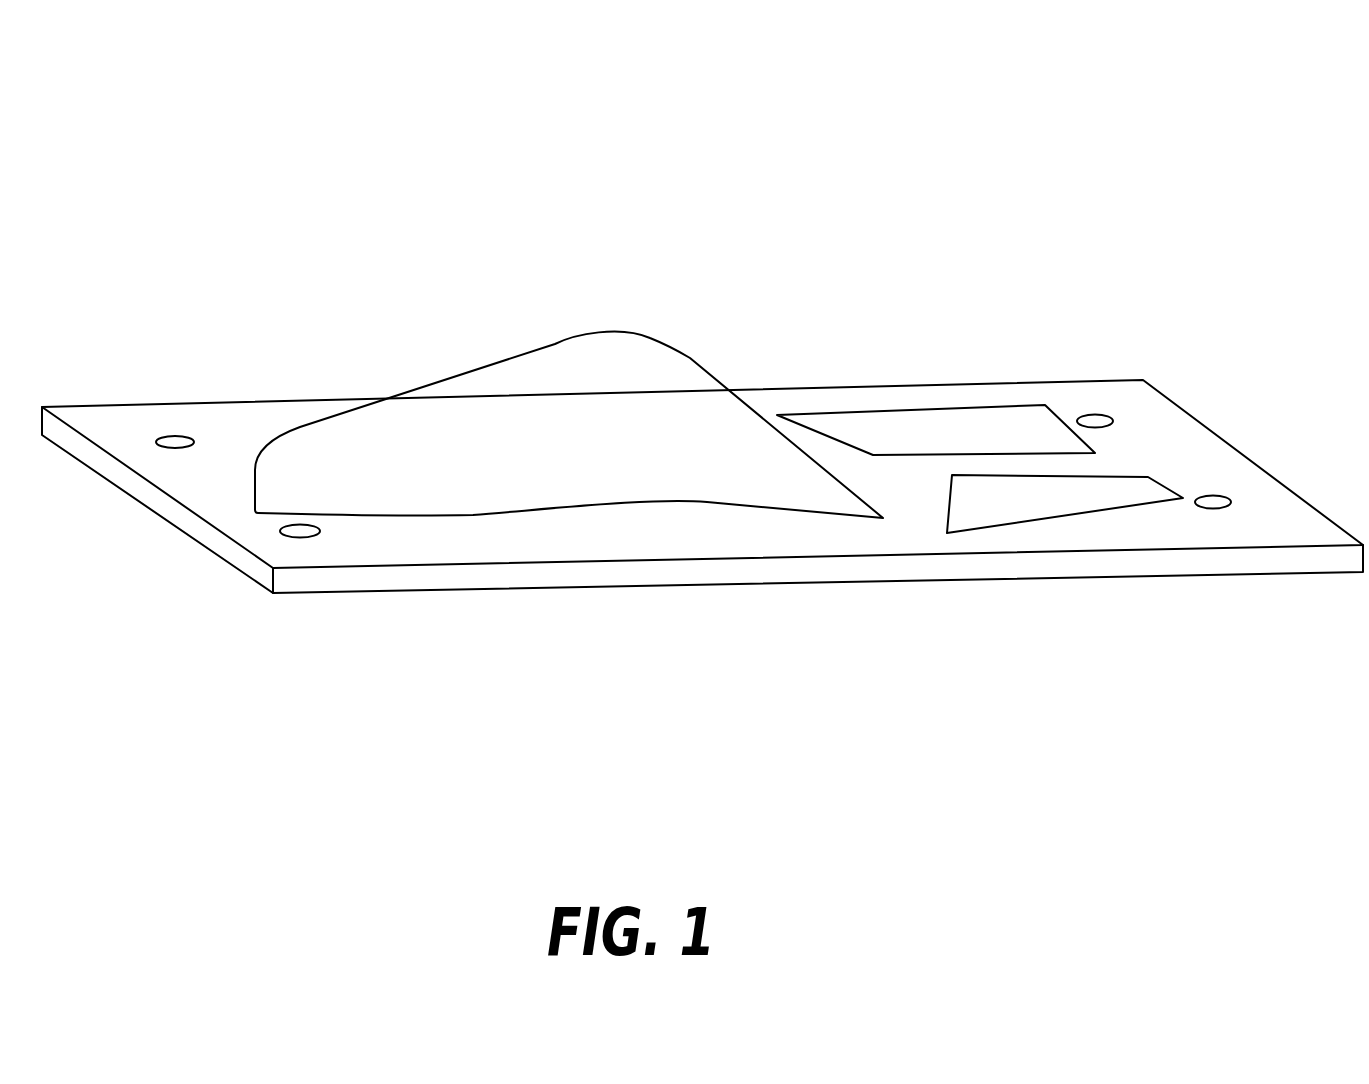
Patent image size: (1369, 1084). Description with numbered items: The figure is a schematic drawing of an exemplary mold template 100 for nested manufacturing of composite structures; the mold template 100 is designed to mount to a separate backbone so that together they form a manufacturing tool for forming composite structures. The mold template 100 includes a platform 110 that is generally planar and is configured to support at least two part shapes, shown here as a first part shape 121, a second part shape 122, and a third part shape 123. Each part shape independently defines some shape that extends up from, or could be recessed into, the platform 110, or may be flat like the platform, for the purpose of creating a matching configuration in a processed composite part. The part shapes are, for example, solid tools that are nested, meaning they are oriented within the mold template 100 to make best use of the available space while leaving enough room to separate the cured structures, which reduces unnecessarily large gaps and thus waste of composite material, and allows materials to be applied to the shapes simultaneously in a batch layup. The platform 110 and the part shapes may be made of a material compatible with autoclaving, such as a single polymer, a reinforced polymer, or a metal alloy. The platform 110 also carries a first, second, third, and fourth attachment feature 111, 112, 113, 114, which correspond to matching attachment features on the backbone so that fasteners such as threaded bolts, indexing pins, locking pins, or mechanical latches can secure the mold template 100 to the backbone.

The mold template 100 is at (213, 159).
The platform 110 is at (43, 405).
The first attachment feature 111 is at (182, 437).
The second attachment feature 112 is at (1095, 413).
The third attachment feature 113 is at (1217, 493).
The fourth attachment feature 114 is at (303, 532).
The first part shape 121 is at (520, 402).
The second part shape 122 is at (958, 430).
The third part shape 123 is at (1058, 498).